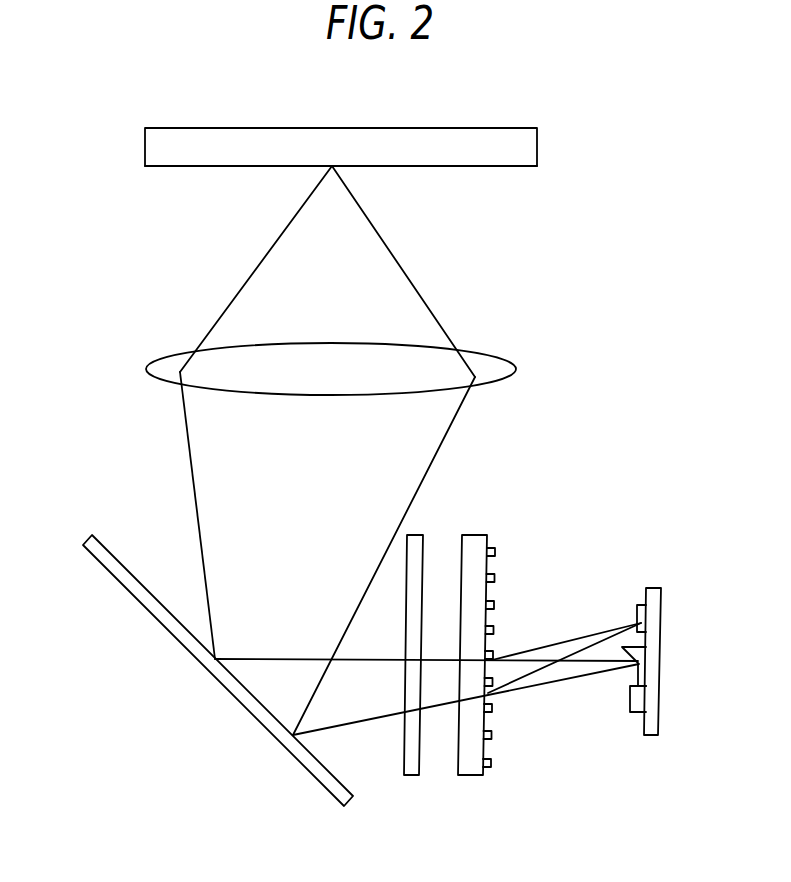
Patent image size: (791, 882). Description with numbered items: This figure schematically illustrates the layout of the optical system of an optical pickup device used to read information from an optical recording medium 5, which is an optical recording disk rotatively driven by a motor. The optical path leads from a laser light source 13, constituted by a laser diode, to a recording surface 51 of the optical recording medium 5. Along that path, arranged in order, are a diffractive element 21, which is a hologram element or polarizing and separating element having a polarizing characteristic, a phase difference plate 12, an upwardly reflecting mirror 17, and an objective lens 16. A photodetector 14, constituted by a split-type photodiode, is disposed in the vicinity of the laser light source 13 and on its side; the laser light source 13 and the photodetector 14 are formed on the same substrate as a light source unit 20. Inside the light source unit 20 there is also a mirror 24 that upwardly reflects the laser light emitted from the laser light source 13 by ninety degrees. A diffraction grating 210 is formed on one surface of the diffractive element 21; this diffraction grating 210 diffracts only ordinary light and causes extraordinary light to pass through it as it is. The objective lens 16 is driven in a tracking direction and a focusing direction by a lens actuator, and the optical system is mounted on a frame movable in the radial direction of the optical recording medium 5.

The optical recording medium 5 is at (522, 151).
The recording surface 51 is at (523, 168).
The objective lens 16 is at (497, 373).
The upwardly reflecting mirror 17 is at (315, 778).
The phase difference plate 12 is at (411, 777).
The diffractive element 21 is at (468, 777).
The diffraction grating 210 is at (495, 550).
The light source unit 20 is at (653, 741).
The photodetector 14 is at (649, 612).
The mirror 24 is at (642, 655).
The laser light source 13 is at (642, 698).